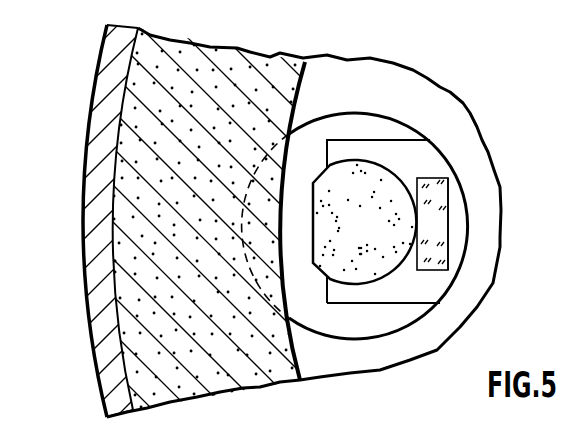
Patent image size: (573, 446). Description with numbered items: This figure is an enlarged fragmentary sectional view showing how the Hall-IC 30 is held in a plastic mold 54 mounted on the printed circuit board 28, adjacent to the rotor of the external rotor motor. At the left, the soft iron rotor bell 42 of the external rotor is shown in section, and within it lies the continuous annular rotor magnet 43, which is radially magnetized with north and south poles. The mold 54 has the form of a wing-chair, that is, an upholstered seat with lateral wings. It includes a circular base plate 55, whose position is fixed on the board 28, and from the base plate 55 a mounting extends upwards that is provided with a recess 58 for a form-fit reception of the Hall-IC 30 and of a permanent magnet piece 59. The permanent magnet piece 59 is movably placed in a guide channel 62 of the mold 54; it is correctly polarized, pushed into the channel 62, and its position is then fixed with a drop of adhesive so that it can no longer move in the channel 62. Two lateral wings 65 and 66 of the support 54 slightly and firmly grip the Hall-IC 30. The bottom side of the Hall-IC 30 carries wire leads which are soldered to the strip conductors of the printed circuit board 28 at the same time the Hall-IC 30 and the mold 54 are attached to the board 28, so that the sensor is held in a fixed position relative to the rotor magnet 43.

The printed circuit board 28 is at (483, 280).
The Hall-IC 30 is at (350, 237).
The rotor bell 42 is at (93, 291).
The rotor magnet 43 is at (222, 376).
The mold of plastic 54 is at (402, 124).
The circular base plate 55 is at (340, 123).
The recess 58 is at (383, 166).
The permanent magnet piece 59 is at (438, 205).
The guide channel 62 is at (442, 254).
The lateral wing 65 is at (355, 148).
The lateral wing 66 is at (350, 290).